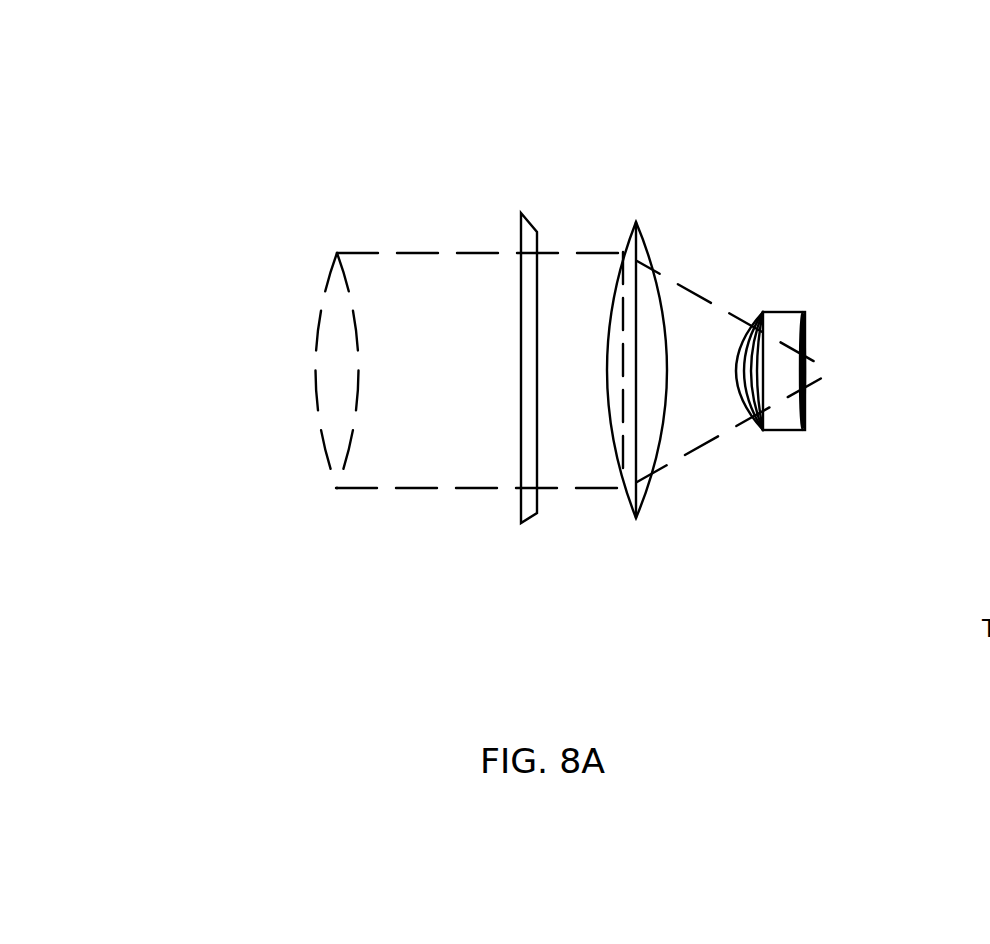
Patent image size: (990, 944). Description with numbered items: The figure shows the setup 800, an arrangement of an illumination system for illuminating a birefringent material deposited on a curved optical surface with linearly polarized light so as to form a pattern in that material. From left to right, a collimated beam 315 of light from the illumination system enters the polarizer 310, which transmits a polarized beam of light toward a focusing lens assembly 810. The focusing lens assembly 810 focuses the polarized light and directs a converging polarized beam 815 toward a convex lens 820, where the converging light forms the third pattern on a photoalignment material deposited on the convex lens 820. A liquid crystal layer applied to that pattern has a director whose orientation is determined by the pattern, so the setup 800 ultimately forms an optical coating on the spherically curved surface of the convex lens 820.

The setup 800 is at (567, 331).
The collimated beam 315 is at (343, 435).
The polarizer 310 is at (530, 228).
The focusing lens assembly 810 is at (670, 463).
The converging polarized beam 815 is at (697, 433).
The convex lens 820 is at (792, 322).